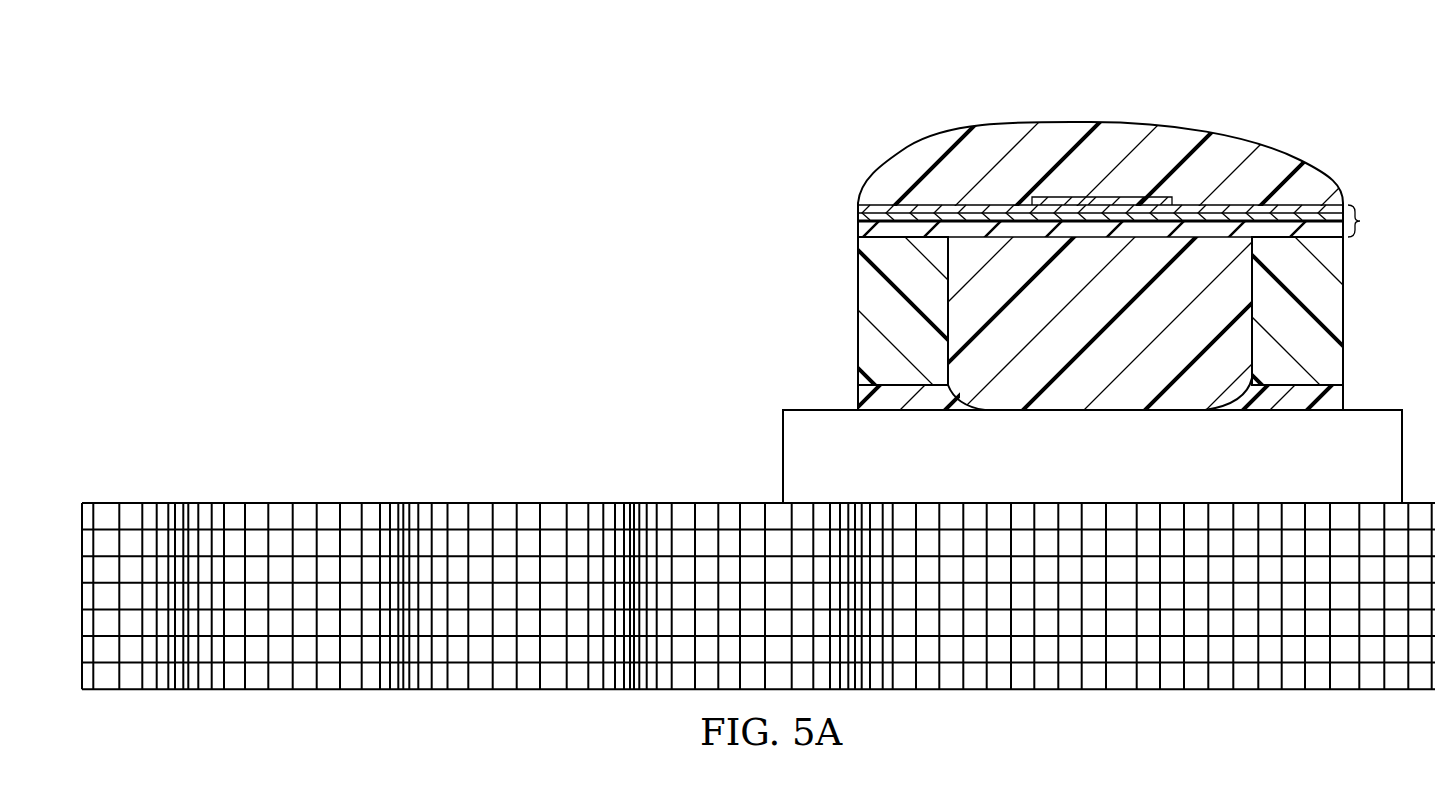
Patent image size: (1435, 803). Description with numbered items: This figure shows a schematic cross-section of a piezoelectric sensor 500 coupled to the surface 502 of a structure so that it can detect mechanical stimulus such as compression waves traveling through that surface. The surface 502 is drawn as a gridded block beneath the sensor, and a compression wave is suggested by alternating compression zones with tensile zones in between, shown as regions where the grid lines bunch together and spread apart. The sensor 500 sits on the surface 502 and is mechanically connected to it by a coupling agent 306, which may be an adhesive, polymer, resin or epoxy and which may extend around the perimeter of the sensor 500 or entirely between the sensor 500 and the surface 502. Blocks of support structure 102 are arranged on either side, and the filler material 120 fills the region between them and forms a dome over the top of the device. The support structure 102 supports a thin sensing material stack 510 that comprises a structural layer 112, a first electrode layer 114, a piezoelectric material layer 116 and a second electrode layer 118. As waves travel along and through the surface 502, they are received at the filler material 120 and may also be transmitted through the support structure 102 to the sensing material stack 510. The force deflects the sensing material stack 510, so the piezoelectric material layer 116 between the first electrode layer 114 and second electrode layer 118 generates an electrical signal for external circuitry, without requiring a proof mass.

The sensor 500 is at (1260, 82).
The surface 502 is at (556, 503).
The sensing material stack 510 is at (1136, 221).
The filler material 120 is at (1162, 137).
The second electrode layer 118 is at (1087, 197).
The piezoelectric material layer 116 is at (1205, 210).
The first electrode layer 114 is at (1108, 223).
The structural layer 112 is at (1085, 234).
The support structure 102 is at (862, 291).
The coupling agent 306 is at (862, 397).